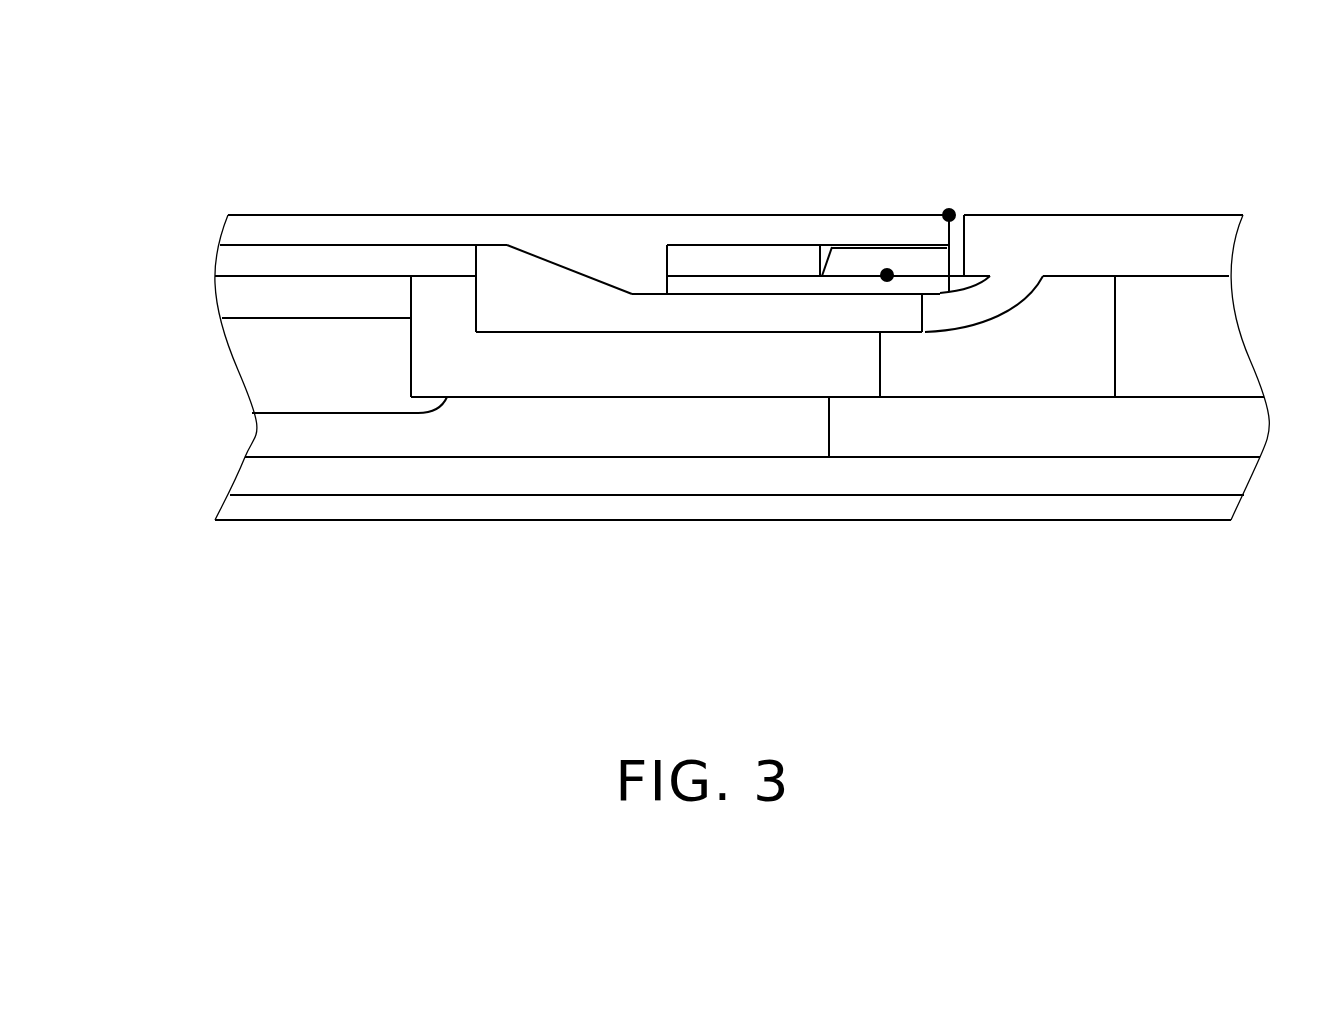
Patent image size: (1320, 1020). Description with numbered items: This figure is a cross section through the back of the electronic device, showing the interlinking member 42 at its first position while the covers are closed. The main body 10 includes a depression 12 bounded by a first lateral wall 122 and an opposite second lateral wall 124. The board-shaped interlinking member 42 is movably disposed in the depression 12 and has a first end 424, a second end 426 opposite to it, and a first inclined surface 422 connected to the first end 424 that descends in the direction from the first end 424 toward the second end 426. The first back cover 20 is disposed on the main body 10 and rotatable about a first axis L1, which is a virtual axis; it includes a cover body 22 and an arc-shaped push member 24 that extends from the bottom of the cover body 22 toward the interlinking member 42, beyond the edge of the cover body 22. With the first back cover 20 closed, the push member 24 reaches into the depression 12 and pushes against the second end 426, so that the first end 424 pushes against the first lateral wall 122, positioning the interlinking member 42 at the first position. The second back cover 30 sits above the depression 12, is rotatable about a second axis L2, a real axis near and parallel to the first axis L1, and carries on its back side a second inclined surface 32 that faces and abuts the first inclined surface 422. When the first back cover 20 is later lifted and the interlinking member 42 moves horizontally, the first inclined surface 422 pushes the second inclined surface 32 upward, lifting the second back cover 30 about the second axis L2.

The main body 10 is at (765, 432).
The depression 12 is at (665, 333).
The first lateral wall 122 is at (474, 306).
The second lateral wall 124 is at (940, 277).
The first back cover 20 is at (1085, 240).
The cover body 22 is at (1205, 232).
The push member 24 is at (982, 303).
The second back cover 30 is at (345, 233).
The second inclined surface 32 is at (590, 270).
The interlinking member 42 is at (710, 312).
The first inclined surface 422 is at (555, 267).
The first end 424 is at (477, 260).
The second end 426 is at (930, 315).
The first axis L1 is at (949, 213).
The second axis L2 is at (887, 274).